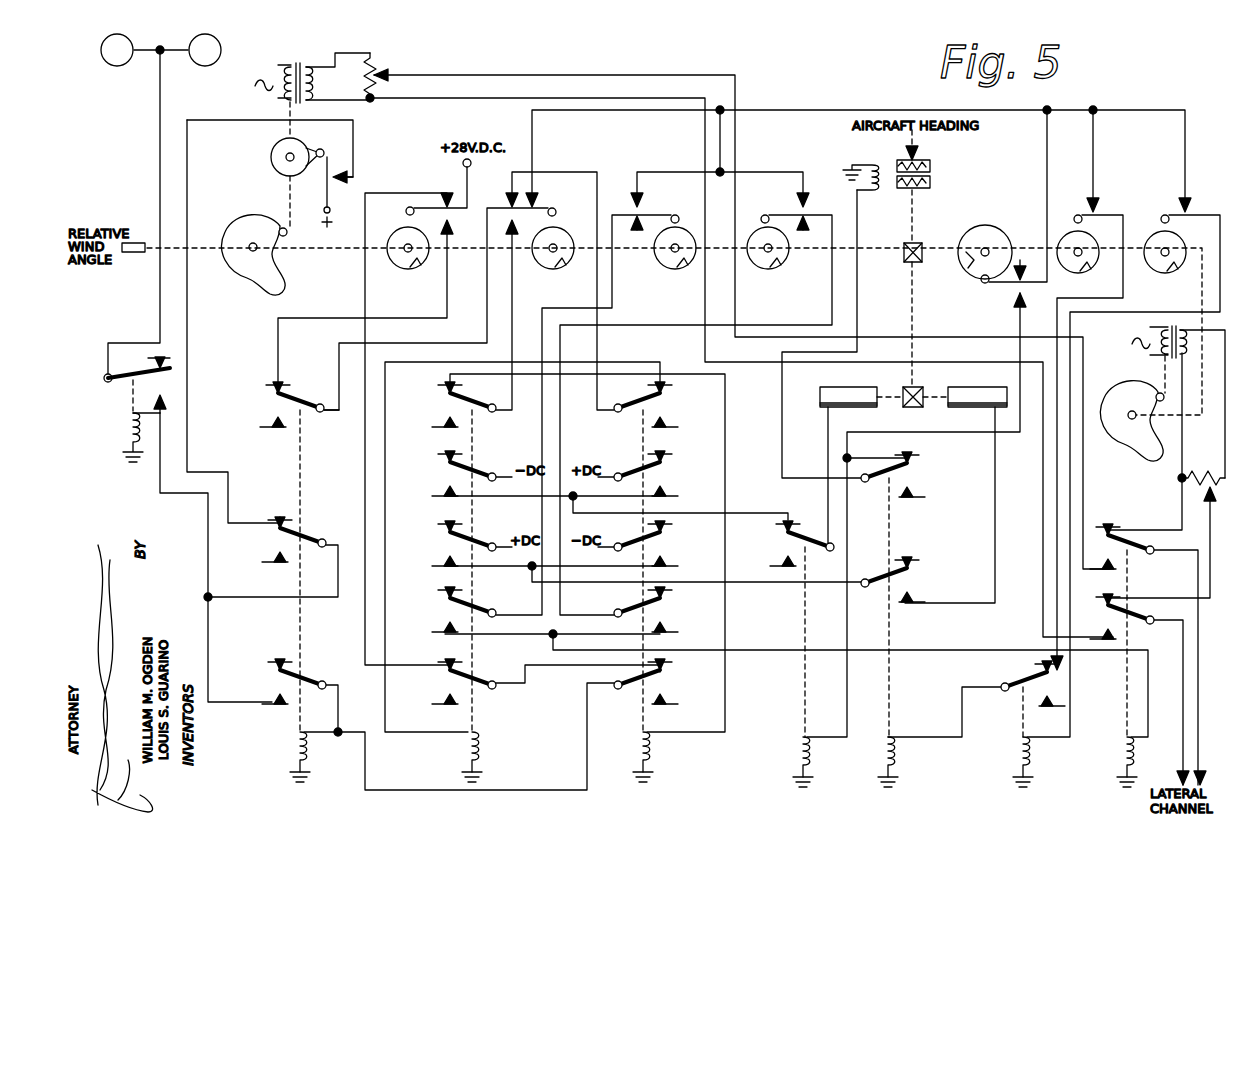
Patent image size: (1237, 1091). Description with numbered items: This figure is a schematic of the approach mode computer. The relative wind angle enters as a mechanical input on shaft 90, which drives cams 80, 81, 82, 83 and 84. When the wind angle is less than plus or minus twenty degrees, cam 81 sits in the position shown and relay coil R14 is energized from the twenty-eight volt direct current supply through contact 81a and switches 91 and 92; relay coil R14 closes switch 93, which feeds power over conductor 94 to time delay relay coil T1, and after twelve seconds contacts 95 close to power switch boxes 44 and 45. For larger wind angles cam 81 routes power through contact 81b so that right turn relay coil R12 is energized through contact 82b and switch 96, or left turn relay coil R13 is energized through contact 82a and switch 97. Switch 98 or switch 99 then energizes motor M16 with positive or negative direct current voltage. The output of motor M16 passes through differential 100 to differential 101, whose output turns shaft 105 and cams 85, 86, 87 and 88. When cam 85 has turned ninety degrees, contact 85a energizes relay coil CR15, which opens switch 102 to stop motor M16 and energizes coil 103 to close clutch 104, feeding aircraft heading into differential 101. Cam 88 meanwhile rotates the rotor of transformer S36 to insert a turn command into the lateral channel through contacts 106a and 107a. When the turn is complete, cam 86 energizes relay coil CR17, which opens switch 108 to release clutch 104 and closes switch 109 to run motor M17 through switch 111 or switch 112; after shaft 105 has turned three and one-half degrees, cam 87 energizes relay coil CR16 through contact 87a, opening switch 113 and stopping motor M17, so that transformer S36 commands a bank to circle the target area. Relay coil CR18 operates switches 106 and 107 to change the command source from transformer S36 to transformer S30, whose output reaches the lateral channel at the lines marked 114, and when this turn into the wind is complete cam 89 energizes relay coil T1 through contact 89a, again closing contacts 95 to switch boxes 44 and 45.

The switch box 44 is at (109, 58).
The switch box 45 is at (197, 58).
The transformer S30 is at (315, 89).
The cam 89 is at (274, 149).
The contact 89a is at (356, 181).
The shaft 90 is at (218, 240).
The cam 80 is at (240, 271).
The cam 81 is at (398, 262).
The contact 81a is at (456, 172).
The contact 81b is at (447, 220).
The cam 82 is at (566, 262).
The contact 82a is at (512, 198).
The contact 82b is at (511, 232).
The cam 83 is at (660, 264).
The cam 84 is at (788, 264).
The coil 103 is at (871, 162).
The clutch 104 is at (932, 170).
The differential 101 is at (904, 248).
The shaft 105 is at (964, 264).
The cam 85 is at (994, 232).
The contact 85a is at (1016, 303).
The cam 86 is at (1079, 273).
The cam 87 is at (1164, 273).
The contact 87a is at (1180, 202).
The transformer S36 is at (1162, 352).
The cam 88 is at (1122, 385).
The motor M16 is at (856, 384).
The motor M17 is at (967, 384).
The differential 100 is at (914, 408).
The switch 108 is at (912, 470).
The switch 109 is at (912, 578).
The switch 102 is at (782, 540).
The switch 106 is at (1114, 543).
The contact 106a is at (1120, 528).
The switch 107 is at (1108, 611).
The contact 107a is at (1116, 598).
The switch 113 is at (1016, 678).
The lateral channel output lead 114 is at (1200, 706).
The contacts 95 is at (155, 374).
The relay coil T1 is at (126, 419).
The conductor 94 is at (206, 554).
The switch 93 is at (274, 674).
The switch 96 is at (444, 398).
The switch 97 is at (666, 398).
The switch 99 is at (444, 470).
The switch 98 is at (666, 470).
The switch 112 is at (444, 540).
The switch 111 is at (666, 540).
The switch 91 is at (446, 676).
The switch 92 is at (664, 676).
The relay coil R14 is at (298, 746).
The left turn relay coil R13 is at (478, 746).
The right turn relay coil R12 is at (648, 746).
The relay coil CR15 is at (800, 750).
The relay coil CR17 is at (894, 750).
The relay coil CR16 is at (1028, 750).
The relay coil CR18 is at (1132, 750).